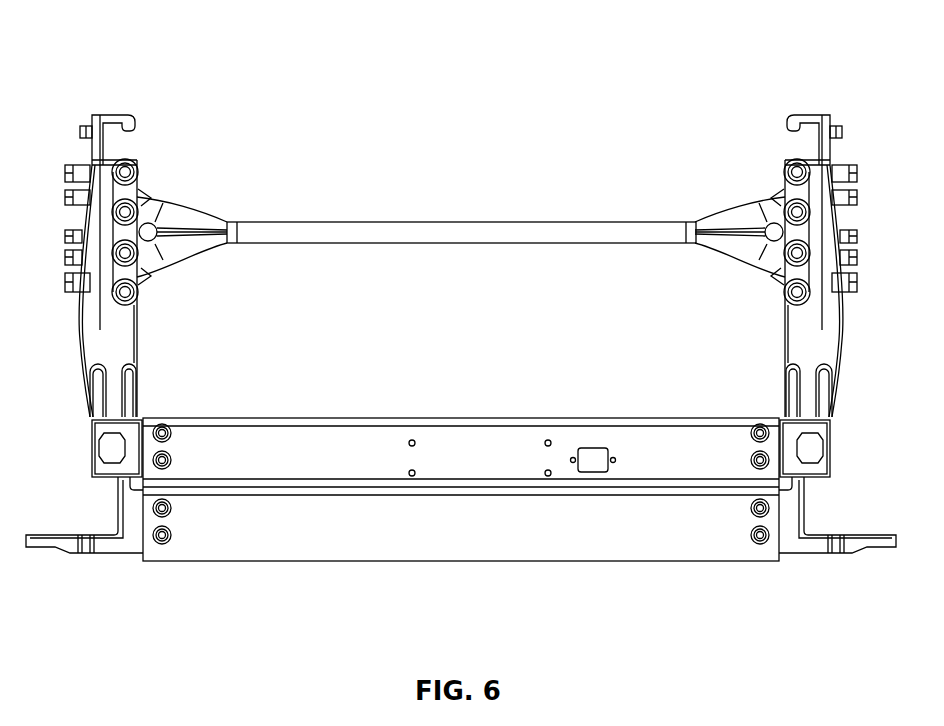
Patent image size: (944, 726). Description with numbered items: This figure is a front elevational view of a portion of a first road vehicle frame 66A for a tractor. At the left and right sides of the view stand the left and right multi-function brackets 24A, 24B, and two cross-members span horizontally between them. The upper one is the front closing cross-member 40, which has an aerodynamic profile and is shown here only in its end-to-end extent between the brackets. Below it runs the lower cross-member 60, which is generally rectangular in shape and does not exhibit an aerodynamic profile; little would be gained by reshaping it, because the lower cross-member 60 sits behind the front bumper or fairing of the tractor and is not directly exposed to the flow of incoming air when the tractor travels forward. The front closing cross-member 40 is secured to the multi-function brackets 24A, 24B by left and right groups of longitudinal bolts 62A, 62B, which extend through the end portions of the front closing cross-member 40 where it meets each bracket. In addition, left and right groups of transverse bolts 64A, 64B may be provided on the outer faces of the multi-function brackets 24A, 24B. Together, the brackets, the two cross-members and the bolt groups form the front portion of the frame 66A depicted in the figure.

The first road vehicle frame 66A is at (620, 107).
The front closing cross-member 40 is at (470, 220).
The lower cross-member 60 is at (470, 448).
The left group of longitudinal bolts 62A is at (792, 168).
The right group of longitudinal bolts 62B is at (128, 170).
The left group of transverse bolts 64A is at (855, 168).
The right group of transverse bolts 64B is at (67, 168).
The multi-function bracket 24A is at (800, 332).
The multi-function bracket 24B is at (110, 330).